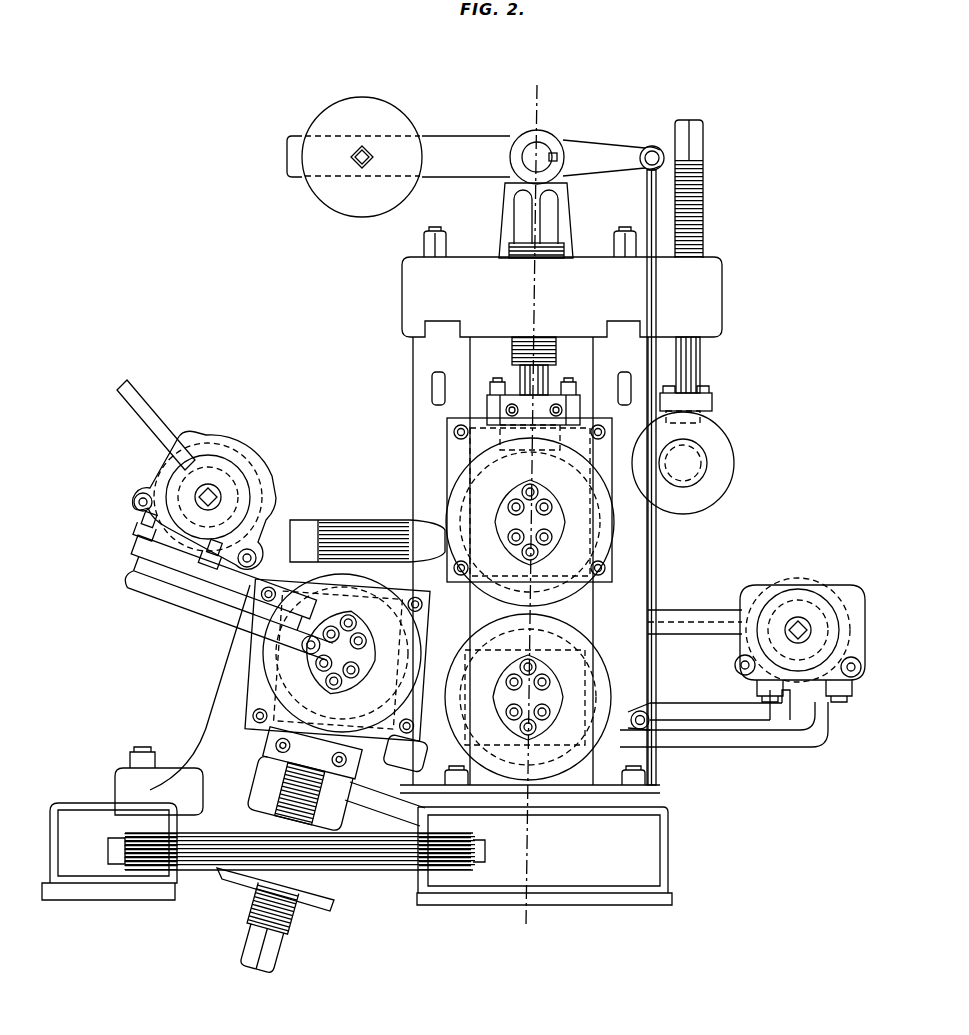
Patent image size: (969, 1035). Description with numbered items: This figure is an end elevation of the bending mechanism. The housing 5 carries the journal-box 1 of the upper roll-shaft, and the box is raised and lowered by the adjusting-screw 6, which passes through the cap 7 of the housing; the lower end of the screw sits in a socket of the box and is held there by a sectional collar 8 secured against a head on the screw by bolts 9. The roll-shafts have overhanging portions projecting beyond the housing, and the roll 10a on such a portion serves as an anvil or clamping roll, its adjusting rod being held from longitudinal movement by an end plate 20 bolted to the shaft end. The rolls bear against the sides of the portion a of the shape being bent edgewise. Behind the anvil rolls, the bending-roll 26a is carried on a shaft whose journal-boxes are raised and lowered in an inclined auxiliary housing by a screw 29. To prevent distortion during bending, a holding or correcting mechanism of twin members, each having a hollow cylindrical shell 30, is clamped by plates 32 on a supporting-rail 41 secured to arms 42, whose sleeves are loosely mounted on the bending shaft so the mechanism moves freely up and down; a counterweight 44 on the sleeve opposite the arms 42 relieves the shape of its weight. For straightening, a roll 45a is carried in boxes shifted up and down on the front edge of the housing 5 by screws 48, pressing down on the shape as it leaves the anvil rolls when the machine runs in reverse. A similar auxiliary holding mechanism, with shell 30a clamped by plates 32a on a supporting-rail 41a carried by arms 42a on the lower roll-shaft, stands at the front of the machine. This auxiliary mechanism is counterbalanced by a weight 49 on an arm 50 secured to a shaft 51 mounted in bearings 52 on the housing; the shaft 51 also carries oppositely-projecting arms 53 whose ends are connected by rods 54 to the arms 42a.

The journal-box 1 is at (500, 436).
The housing 5 is at (205, 690).
The adjusting-screw 6 is at (556, 352).
The cap 7 is at (562, 282).
The sectional collar 8 is at (495, 397).
The bolt 9 is at (581, 370).
The roll 10a is at (529, 609).
The end plate 20 is at (529, 610).
The bending-roll 26a is at (337, 657).
The screw 29 is at (288, 798).
The hollow cylindrical shell 30 is at (222, 472).
The hollow cylindrical shell 30a is at (800, 598).
The clamping-plate 32 is at (150, 532).
The clamping-plate 32a is at (757, 686).
The supporting-rail 41 is at (165, 545).
The supporting-rail 41a is at (812, 702).
The arm 42 is at (212, 612).
The arm 42a is at (728, 742).
The counterweight 44 is at (409, 740).
The straightening roll 45a is at (736, 478).
The screw 48 is at (706, 208).
The weight 49 is at (362, 157).
The arm 50 is at (466, 156).
The shaft 51 is at (541, 152).
The bearing 52 is at (505, 221).
The arm 53 is at (630, 464).
The rod 54 is at (646, 352).
The portion of the shape a is at (700, 622).